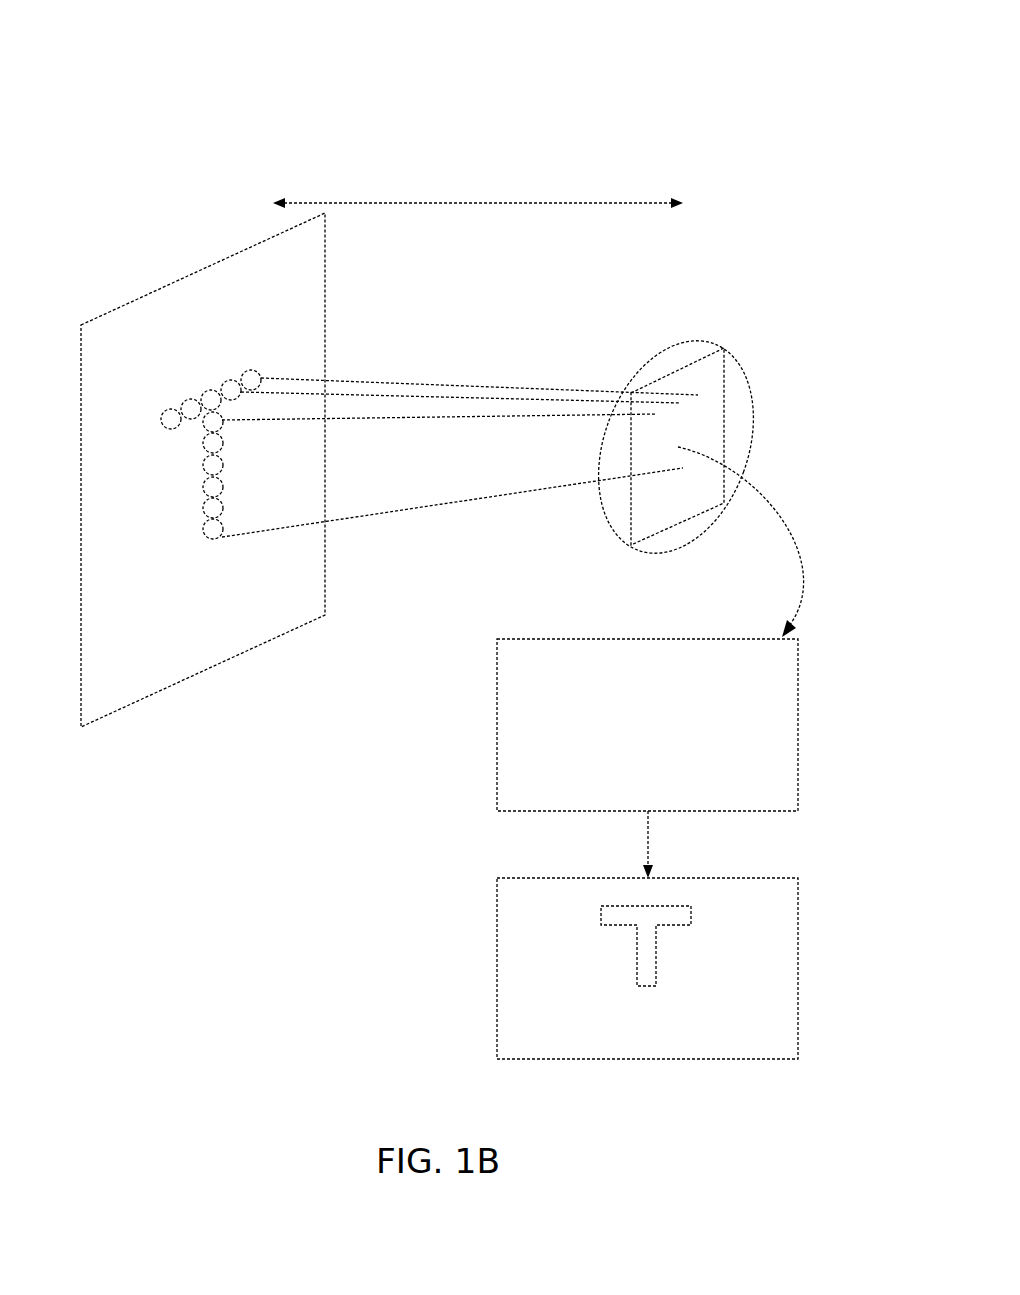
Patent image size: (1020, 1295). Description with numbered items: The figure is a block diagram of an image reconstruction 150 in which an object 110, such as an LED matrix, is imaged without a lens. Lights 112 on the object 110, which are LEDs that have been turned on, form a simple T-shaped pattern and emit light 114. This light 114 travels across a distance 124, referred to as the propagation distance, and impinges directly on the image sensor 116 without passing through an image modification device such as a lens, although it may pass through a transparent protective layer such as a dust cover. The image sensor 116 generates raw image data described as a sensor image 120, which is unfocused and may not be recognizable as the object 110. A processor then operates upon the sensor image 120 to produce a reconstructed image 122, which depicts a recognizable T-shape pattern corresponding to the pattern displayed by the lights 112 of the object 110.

The object 110 is at (140, 297).
The lights 112 is at (162, 419).
The light 114 is at (467, 385).
The image sensor 116 is at (725, 373).
The sensor image 120 is at (665, 759).
The reconstructed image 122 is at (665, 1053).
The distance 124 is at (503, 192).
The image reconstruction 150 is at (212, 57).